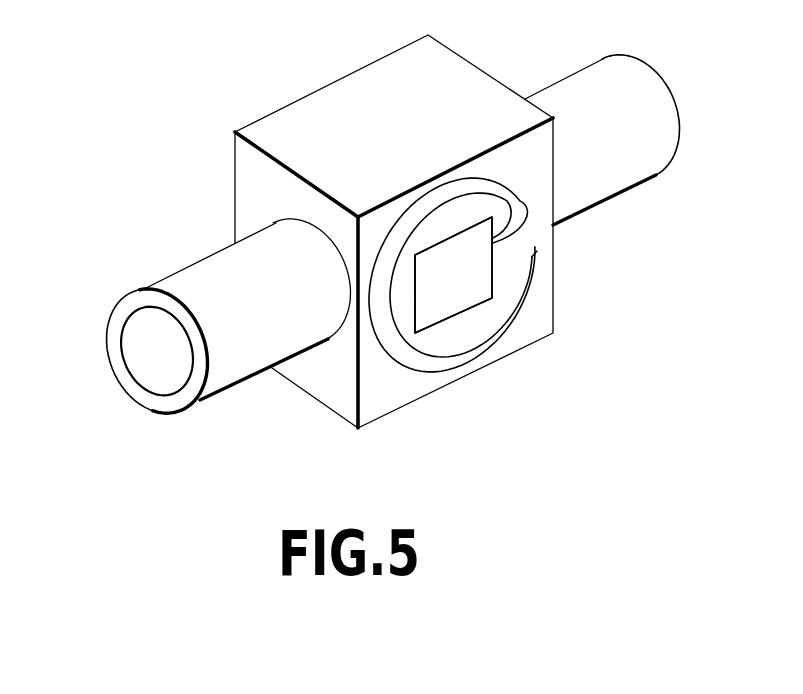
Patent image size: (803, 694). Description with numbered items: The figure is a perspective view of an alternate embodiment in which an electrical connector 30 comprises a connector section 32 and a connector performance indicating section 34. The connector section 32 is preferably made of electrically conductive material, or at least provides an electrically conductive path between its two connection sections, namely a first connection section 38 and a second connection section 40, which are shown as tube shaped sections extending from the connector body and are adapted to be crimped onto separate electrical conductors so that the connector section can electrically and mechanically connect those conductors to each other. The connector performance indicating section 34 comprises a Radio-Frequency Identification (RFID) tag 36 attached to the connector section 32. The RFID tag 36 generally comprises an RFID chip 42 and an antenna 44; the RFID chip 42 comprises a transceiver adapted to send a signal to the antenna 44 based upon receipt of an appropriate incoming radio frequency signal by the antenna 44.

The electrical connector 30 is at (133, 116).
The connector section 32 is at (250, 237).
The connector performance indicating section 34 is at (342, 88).
The Radio-Frequency Identification (RFID) tag 36 is at (453, 303).
The first connection section 38 is at (150, 392).
The second connection section 40 is at (637, 185).
The RFID chip 42 is at (478, 279).
The antenna 44 is at (423, 364).